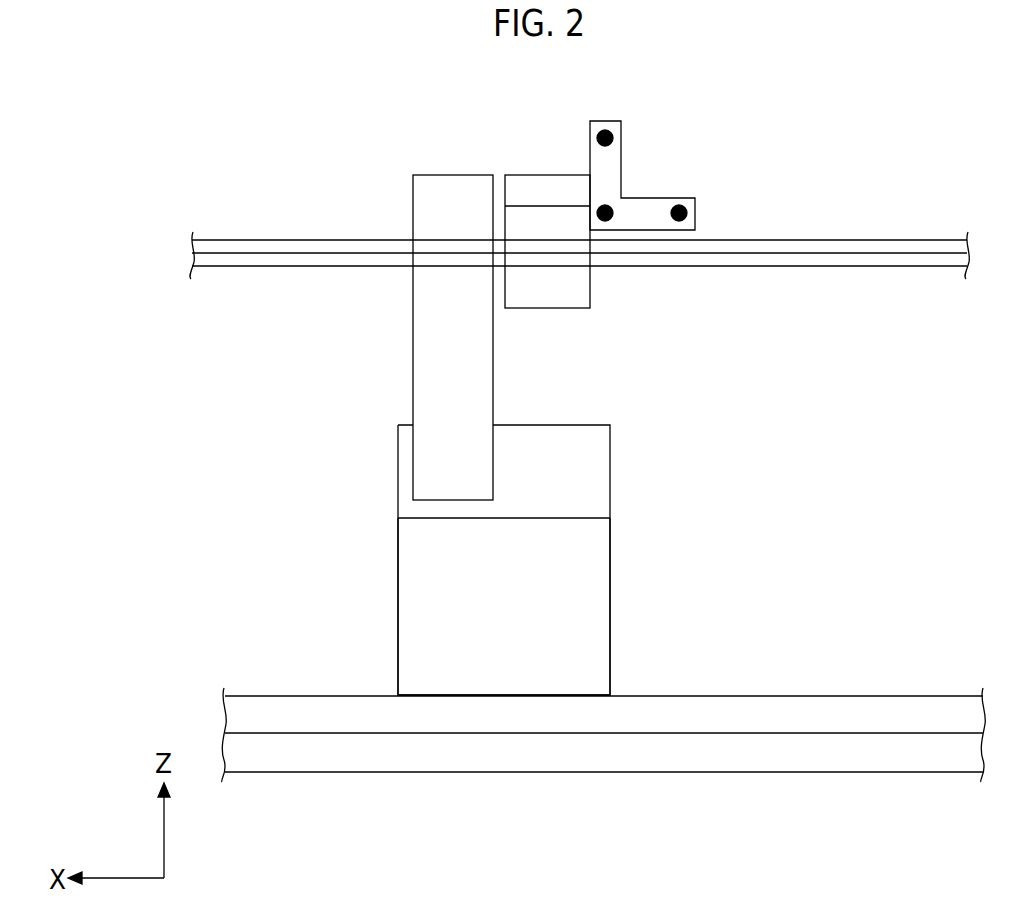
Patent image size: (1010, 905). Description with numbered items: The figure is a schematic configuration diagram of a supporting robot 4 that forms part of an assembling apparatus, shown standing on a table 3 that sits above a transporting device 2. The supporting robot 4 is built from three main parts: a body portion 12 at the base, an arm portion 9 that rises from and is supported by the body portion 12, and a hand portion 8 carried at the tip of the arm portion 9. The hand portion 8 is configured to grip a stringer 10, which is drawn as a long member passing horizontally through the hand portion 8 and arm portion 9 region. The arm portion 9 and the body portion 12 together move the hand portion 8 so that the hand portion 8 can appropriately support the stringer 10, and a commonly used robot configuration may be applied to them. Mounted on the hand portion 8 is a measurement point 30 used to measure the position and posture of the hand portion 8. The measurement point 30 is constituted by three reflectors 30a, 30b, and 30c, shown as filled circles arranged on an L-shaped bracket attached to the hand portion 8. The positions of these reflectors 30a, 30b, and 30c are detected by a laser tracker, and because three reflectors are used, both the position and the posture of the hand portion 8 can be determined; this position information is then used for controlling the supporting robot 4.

The transporting device 2 is at (815, 760).
The table 3 is at (812, 702).
The supporting robot 4 is at (645, 497).
The hand portion 8 is at (603, 291).
The arm portion 9 is at (448, 178).
The stringer 10 is at (870, 240).
The body portion 12 is at (398, 589).
The measurement point 30 is at (675, 127).
The reflector 30a is at (683, 206).
The reflector 30b is at (610, 207).
The reflector 30c is at (597, 138).